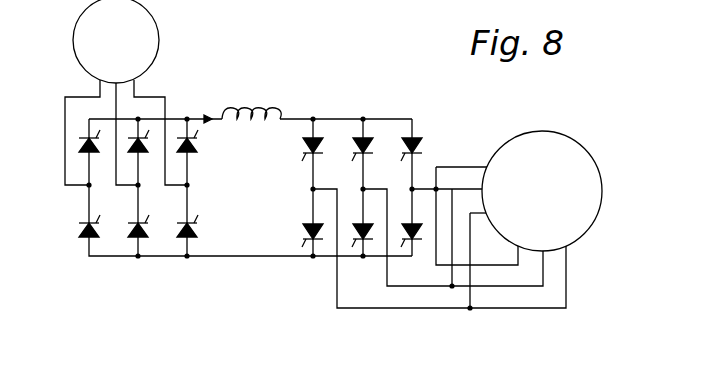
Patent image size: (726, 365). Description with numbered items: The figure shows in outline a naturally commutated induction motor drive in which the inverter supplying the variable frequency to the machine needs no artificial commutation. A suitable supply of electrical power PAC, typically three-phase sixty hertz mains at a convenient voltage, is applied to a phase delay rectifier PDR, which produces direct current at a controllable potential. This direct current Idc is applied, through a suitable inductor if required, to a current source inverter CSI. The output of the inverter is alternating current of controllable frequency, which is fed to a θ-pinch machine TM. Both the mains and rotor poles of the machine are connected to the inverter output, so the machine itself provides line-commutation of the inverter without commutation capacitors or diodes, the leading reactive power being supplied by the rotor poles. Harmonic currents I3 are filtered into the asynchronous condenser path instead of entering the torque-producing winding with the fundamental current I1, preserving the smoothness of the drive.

The supply of electrical power PAC is at (158, 38).
The phase delay rectifier PDR is at (110, 264).
The direct current Idc is at (251, 135).
The current source inverter CSI is at (379, 98).
The θ-pinch machine TM is at (542, 191).
The fundamental current I1 is at (461, 151).
The harmonic currents I3 is at (585, 287).